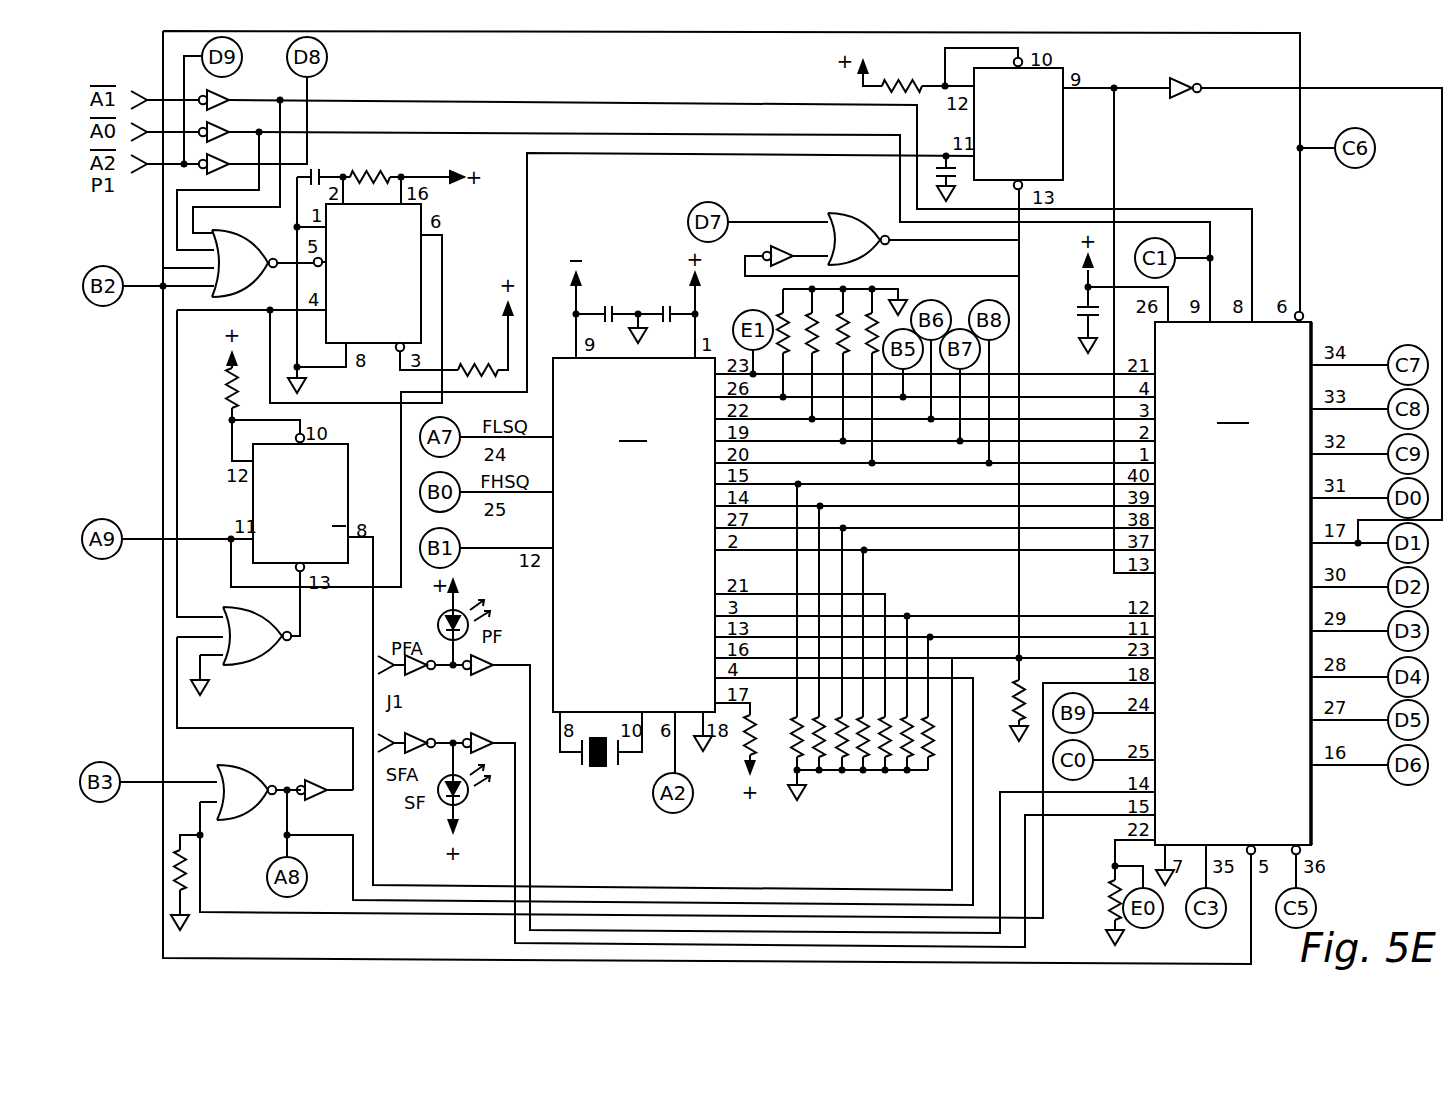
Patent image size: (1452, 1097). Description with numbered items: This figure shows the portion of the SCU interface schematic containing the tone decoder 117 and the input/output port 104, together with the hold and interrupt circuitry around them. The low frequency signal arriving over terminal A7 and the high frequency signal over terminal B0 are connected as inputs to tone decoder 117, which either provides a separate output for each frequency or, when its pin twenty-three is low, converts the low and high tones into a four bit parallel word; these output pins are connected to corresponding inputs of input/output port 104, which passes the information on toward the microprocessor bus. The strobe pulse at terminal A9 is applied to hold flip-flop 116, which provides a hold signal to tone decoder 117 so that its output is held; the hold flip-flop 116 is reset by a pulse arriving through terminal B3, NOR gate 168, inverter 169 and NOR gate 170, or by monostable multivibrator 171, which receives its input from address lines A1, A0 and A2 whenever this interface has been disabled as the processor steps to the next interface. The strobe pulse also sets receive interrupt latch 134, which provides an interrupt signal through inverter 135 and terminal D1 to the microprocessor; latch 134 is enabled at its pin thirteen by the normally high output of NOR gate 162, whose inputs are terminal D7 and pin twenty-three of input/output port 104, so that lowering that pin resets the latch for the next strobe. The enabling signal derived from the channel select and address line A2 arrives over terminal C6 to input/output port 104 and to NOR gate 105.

The input/output port 104 is at (1233, 583).
The NOR gate 105 is at (233, 247).
The hold flip-flop 116 is at (340, 448).
The tone decoder 117 is at (634, 535).
The receive interrupt latch 134 is at (1050, 148).
The inverter 135 is at (1183, 76).
The NOR gate 162 is at (862, 252).
The NOR gate 168 is at (253, 768).
The inverter 169 is at (312, 801).
The NOR gate 170 is at (250, 661).
The monostable multivibrator 171 is at (410, 215).